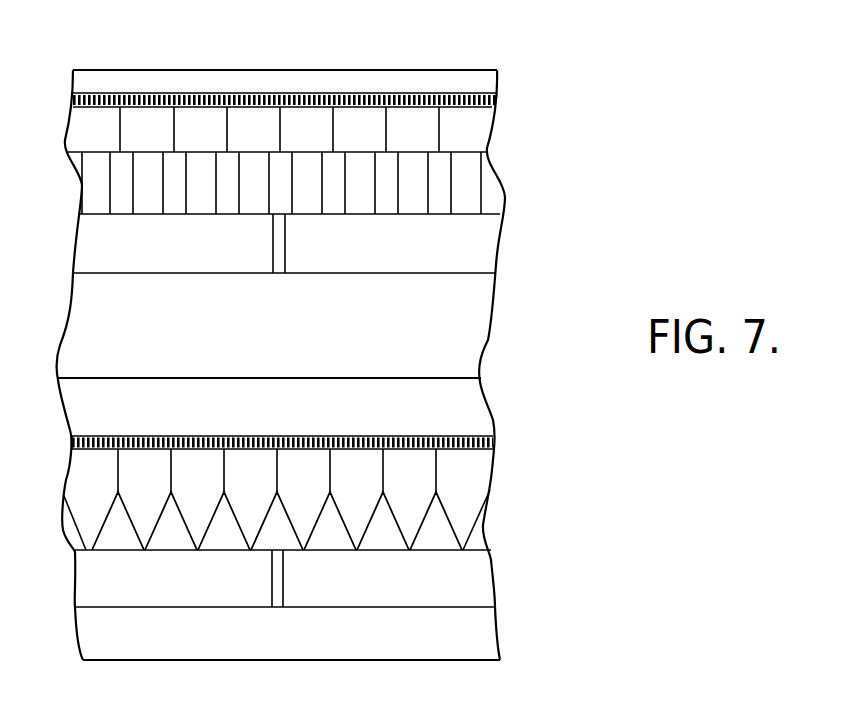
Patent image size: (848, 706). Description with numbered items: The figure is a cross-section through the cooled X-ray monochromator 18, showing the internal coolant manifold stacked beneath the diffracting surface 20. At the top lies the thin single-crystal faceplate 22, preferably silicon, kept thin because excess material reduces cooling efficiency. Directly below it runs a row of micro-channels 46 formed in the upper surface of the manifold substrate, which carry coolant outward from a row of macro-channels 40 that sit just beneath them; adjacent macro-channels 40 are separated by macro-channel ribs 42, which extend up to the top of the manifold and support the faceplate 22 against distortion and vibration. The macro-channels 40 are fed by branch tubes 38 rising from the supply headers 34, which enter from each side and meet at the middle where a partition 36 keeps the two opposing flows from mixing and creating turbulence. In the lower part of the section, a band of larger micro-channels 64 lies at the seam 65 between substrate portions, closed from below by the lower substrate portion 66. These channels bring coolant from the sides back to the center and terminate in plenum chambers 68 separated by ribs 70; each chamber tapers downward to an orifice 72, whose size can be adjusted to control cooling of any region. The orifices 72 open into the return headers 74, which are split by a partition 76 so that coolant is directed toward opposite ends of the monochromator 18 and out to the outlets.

The monochromator 18 is at (551, 175).
The surface 20 is at (305, 70).
The faceplate 22 is at (499, 82).
The supply headers 34 is at (155, 275).
The partition 36 is at (288, 259).
The branch tubes 38 is at (477, 197).
The macro-channels 40 is at (475, 140).
The macro-channel ribs 42 is at (122, 116).
The micro-channels 46 is at (72, 100).
The larger micro-channels 64 is at (70, 440).
The seam 65 is at (68, 456).
The lower substrate portion 66 is at (532, 476).
The plenum chambers 68 is at (477, 484).
The ribs 70 is at (173, 478).
The orifices 72 is at (197, 549).
The return headers 74 is at (399, 599).
The partition 76 is at (286, 598).